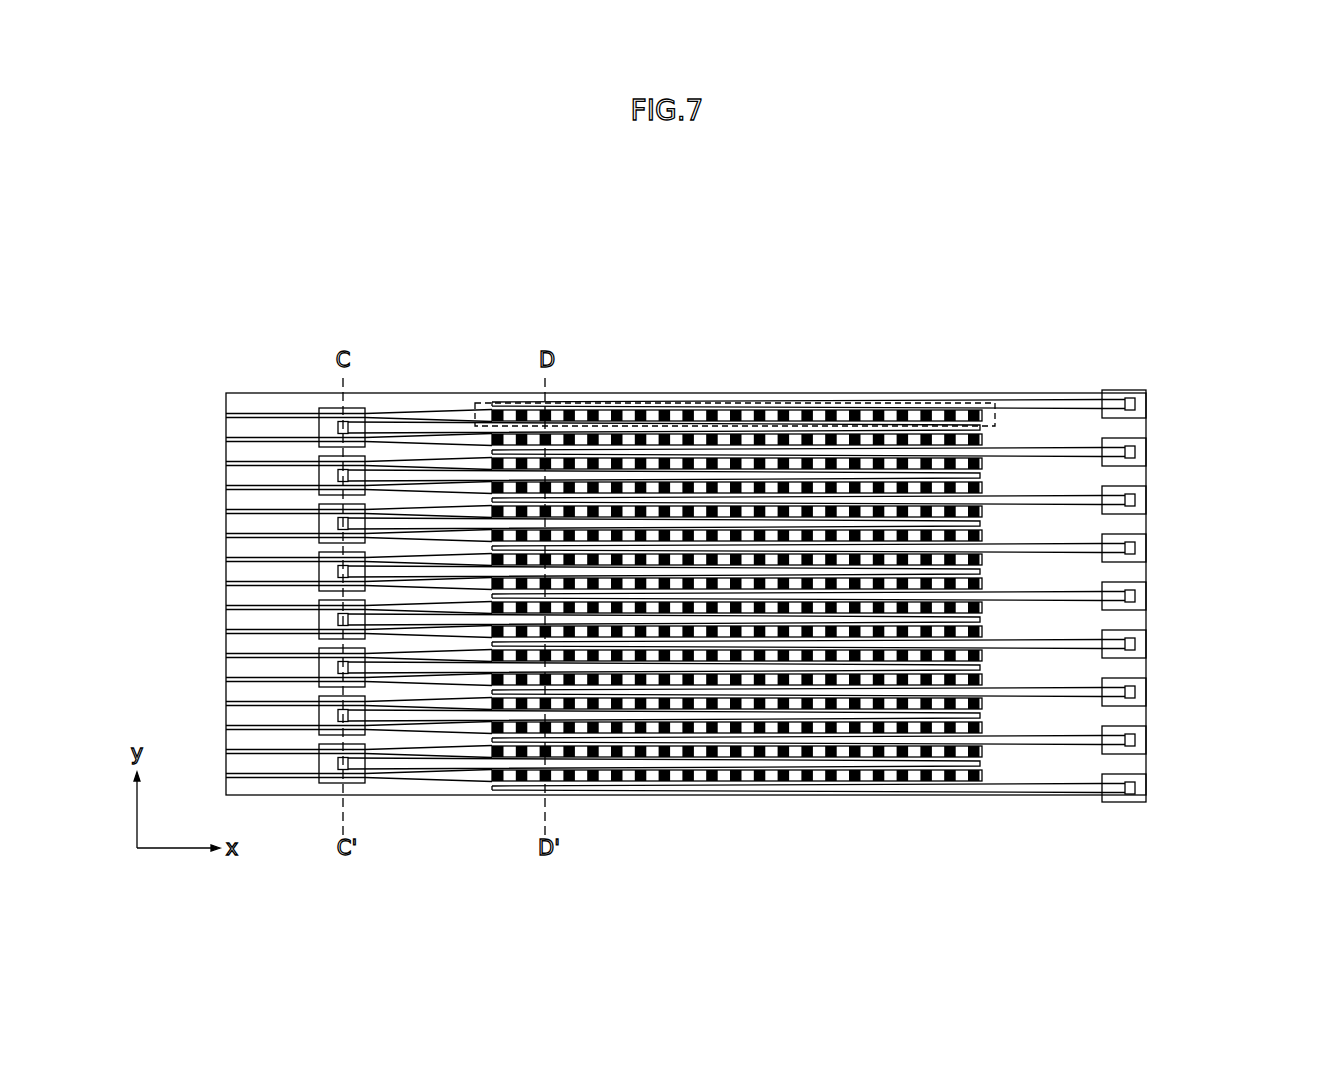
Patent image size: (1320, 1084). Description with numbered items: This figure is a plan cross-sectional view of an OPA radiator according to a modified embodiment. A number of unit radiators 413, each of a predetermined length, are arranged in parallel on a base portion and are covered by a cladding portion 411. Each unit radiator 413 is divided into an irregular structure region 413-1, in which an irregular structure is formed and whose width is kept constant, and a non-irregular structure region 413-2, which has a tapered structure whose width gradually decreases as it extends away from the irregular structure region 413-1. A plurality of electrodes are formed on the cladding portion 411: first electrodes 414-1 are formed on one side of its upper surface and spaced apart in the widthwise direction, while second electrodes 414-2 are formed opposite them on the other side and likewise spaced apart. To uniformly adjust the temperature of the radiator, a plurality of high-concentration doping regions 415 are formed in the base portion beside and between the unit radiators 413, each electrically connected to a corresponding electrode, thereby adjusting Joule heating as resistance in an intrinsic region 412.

The cladding portion 411 is at (393, 400).
The intrinsic region 412 is at (488, 398).
The unit radiator 413 is at (602, 242).
The irregular structure region 413-1 is at (607, 442).
The non-irregular structure region 413-2 is at (273, 410).
The first electrodes 414-1 is at (320, 783).
The second electrodes 414-2 is at (1137, 632).
The high-concentration doping region 415 is at (1072, 402).